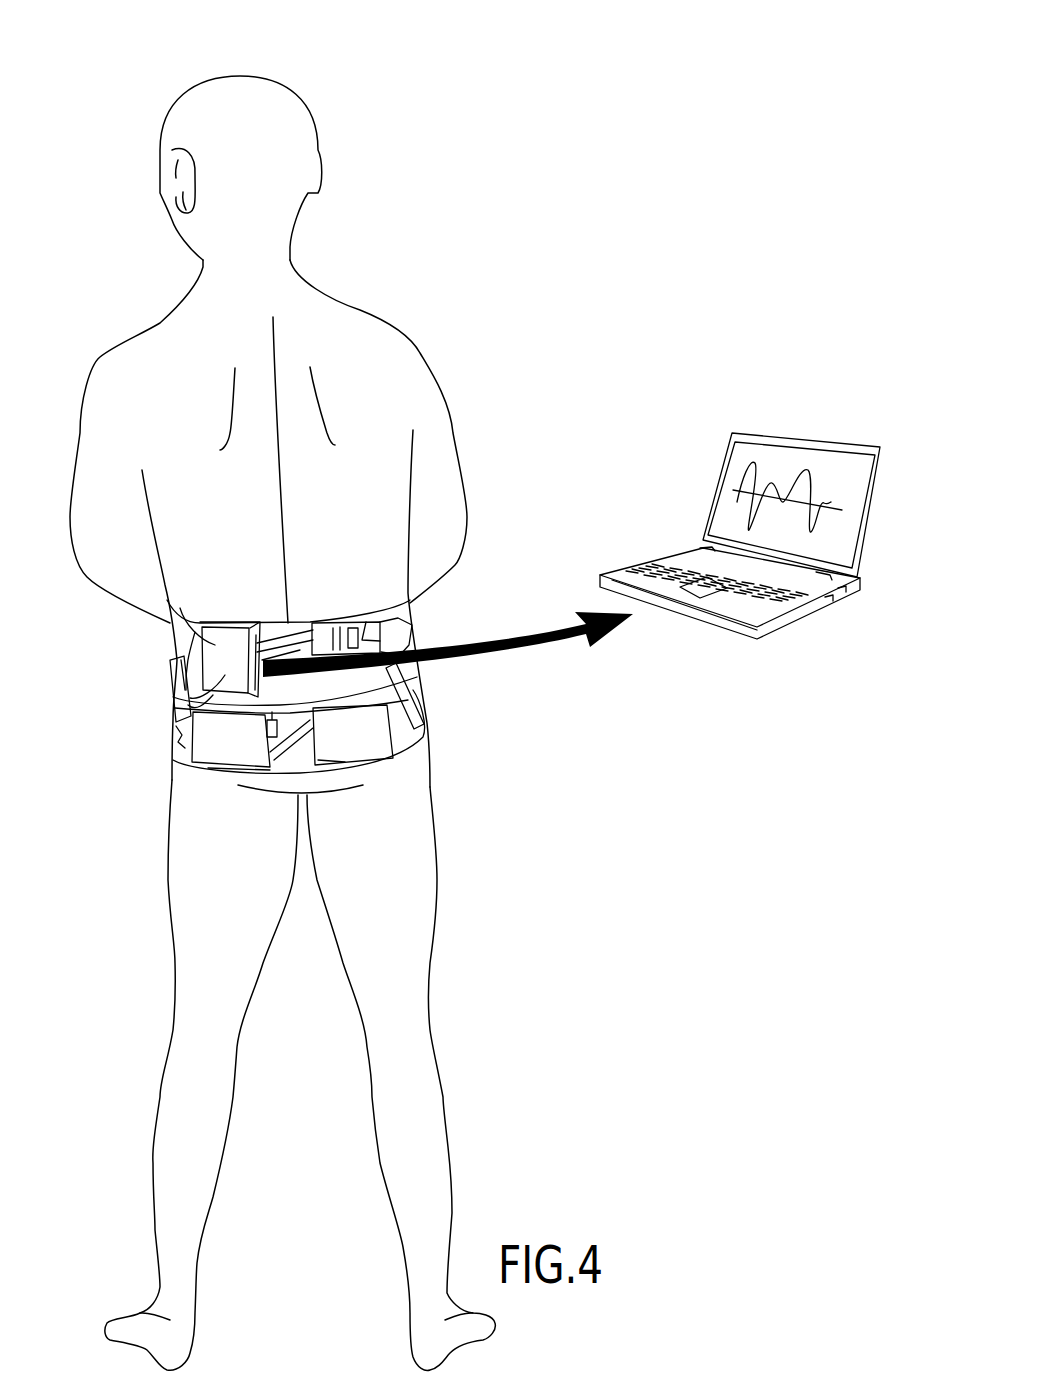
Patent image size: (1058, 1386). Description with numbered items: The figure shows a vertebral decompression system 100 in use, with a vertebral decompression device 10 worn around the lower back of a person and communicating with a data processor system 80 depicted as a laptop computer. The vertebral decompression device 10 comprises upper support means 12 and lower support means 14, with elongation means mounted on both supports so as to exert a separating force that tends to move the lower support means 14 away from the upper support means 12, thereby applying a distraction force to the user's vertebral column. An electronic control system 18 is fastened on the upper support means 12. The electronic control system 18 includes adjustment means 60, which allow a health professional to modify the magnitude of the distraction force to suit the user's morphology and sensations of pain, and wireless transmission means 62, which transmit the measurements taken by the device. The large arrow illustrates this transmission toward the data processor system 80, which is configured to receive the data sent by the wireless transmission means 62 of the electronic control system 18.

The vertebral decompression system 100 is at (733, 80).
The vertebral decompression device 10 is at (330, 592).
The upper support means 12 is at (167, 623).
The lower support means 14 is at (172, 750).
The electronic control system 18 is at (197, 667).
The adjustment means 60 is at (225, 637).
The wireless transmission means 62 is at (223, 677).
The data processor system 80 is at (805, 425).